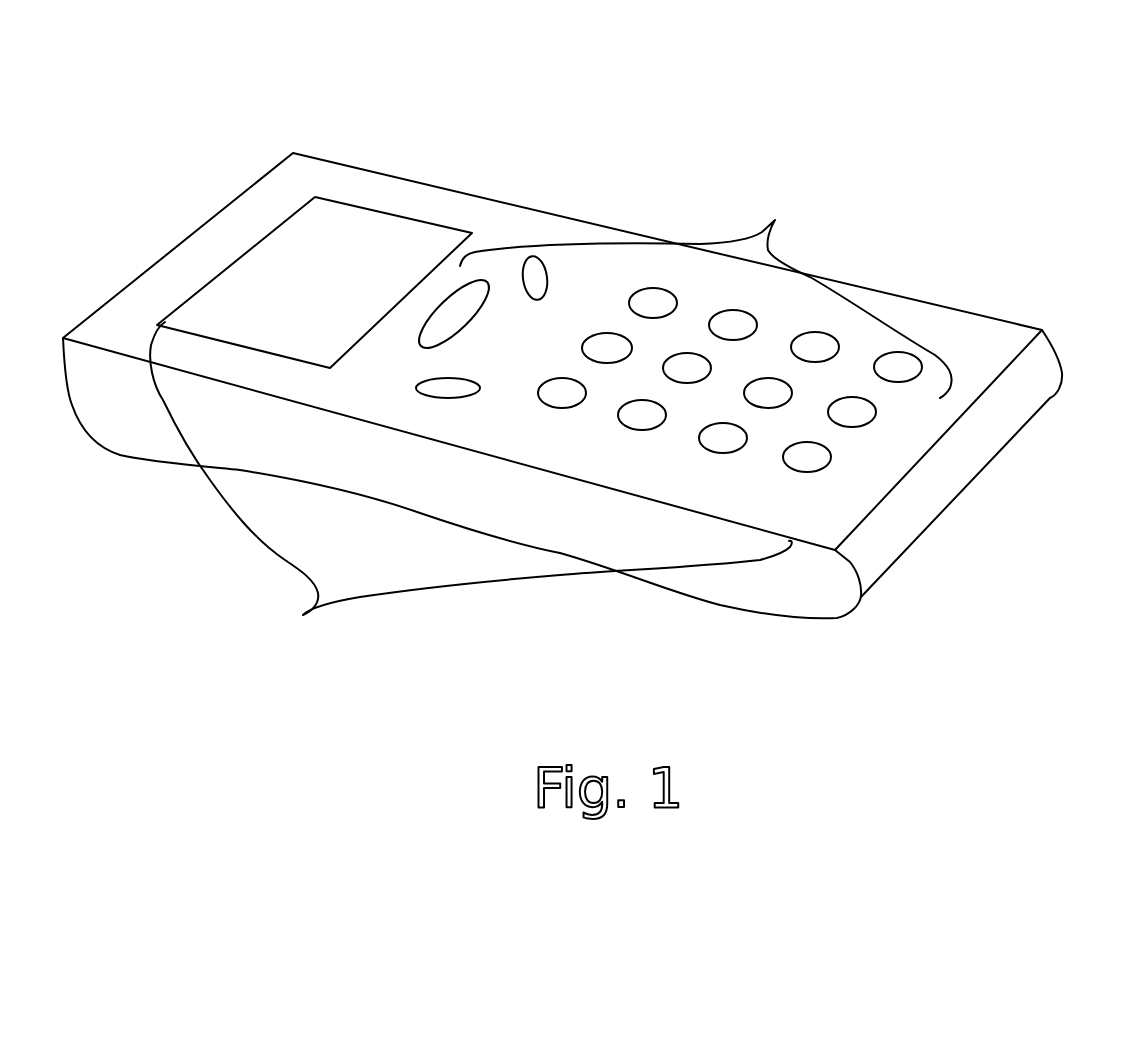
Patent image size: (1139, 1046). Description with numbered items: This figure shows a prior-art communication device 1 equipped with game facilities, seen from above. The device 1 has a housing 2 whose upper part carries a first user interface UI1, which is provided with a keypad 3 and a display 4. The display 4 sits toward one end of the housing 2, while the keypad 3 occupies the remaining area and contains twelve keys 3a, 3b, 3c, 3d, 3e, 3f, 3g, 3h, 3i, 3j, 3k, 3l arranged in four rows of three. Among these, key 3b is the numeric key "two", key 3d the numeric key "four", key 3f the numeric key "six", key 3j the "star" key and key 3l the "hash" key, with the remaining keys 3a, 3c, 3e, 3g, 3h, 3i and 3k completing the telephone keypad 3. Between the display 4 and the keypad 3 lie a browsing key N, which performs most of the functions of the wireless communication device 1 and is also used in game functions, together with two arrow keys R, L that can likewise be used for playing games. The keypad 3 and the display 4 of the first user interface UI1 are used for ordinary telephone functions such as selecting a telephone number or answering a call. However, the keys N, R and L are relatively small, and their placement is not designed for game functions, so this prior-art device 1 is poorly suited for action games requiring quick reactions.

The communication device 1 is at (1083, 585).
The housing 2 is at (837, 618).
The keypad 3 is at (706, 285).
The keypad key 3a is at (543, 407).
The numeric key "2" 3b is at (580, 352).
The keypad key 3c is at (630, 305).
The numeric key "4" 3d is at (633, 432).
The keypad key 3e is at (673, 363).
The numeric key "6" 3f is at (712, 322).
The keypad key 3g is at (723, 453).
The keypad key 3h is at (745, 393).
The keypad key 3i is at (830, 334).
The "*" key 3j is at (807, 472).
The keypad key 3k is at (877, 413).
The "#" key 3l is at (925, 365).
The display 4 is at (398, 179).
The right arrow key R is at (540, 256).
The browsing key N is at (418, 338).
The left arrow key L is at (437, 398).
The first user interface UI1 is at (471, 492).